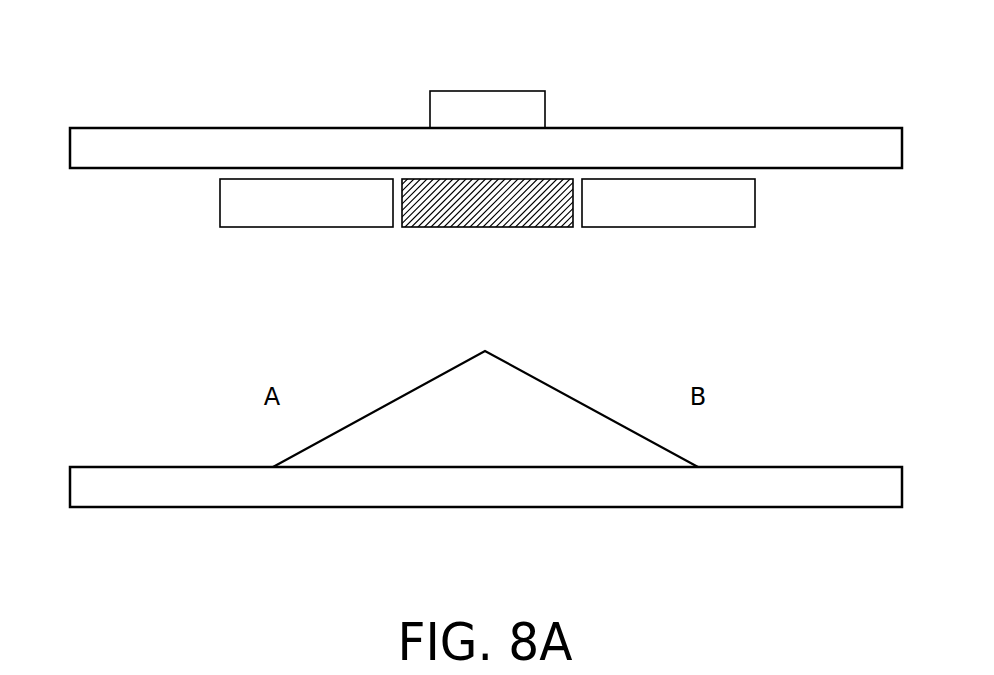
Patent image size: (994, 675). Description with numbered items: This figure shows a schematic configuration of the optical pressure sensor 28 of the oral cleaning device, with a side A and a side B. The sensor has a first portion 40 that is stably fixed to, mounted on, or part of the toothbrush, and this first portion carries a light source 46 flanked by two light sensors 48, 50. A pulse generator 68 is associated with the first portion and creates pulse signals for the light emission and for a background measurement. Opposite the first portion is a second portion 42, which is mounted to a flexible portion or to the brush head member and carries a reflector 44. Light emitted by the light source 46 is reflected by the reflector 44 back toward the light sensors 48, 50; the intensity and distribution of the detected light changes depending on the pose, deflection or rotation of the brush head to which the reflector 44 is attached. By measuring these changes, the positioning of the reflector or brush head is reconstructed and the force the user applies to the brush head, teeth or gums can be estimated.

The pressure sensor 28 is at (114, 102).
The first portion 40 is at (828, 127).
The second portion 42 is at (812, 510).
The reflector 44 is at (605, 412).
The light source 46 is at (487, 228).
The light sensor 48 is at (304, 228).
The light sensor 50 is at (665, 228).
The pulse generator 68 is at (487, 90).